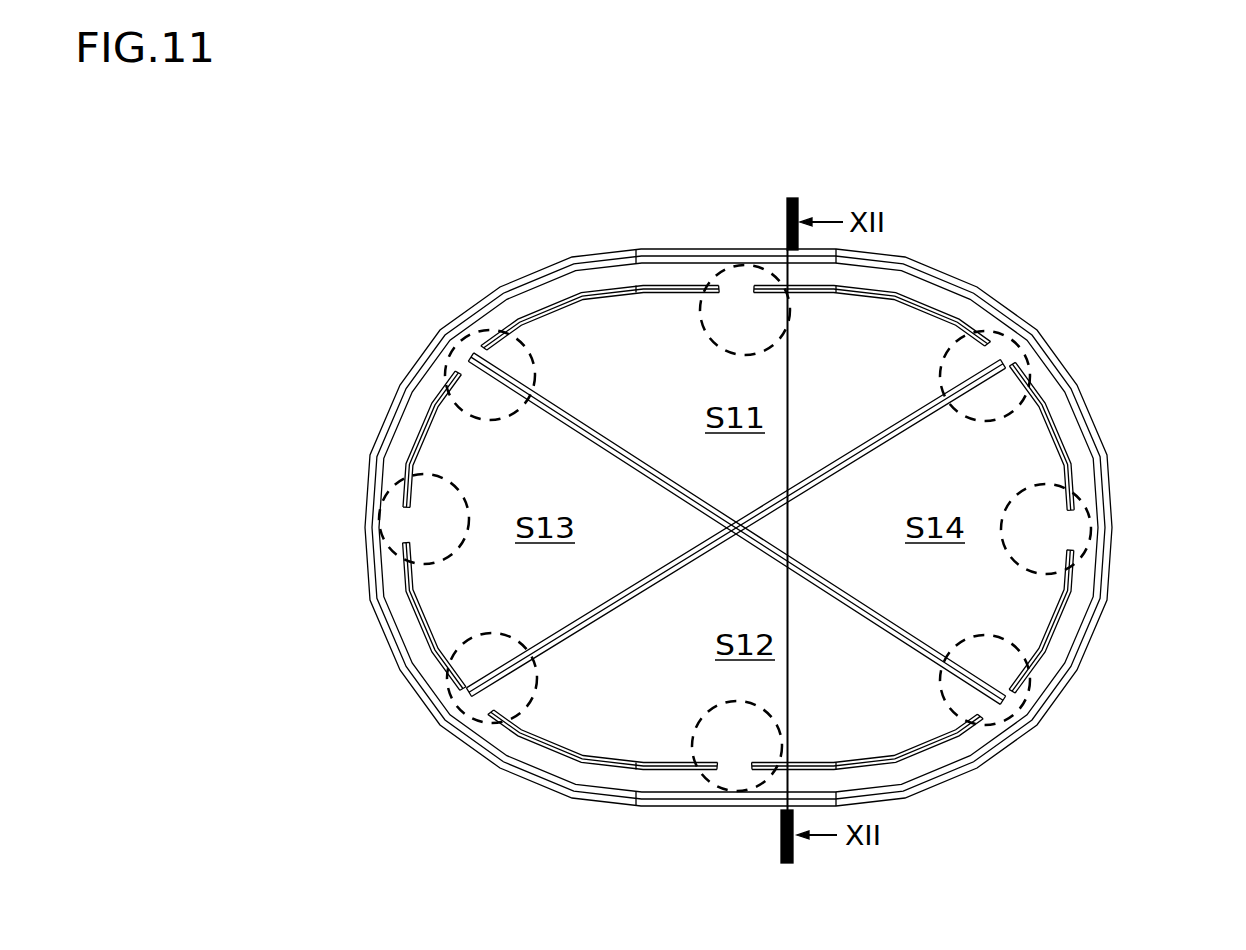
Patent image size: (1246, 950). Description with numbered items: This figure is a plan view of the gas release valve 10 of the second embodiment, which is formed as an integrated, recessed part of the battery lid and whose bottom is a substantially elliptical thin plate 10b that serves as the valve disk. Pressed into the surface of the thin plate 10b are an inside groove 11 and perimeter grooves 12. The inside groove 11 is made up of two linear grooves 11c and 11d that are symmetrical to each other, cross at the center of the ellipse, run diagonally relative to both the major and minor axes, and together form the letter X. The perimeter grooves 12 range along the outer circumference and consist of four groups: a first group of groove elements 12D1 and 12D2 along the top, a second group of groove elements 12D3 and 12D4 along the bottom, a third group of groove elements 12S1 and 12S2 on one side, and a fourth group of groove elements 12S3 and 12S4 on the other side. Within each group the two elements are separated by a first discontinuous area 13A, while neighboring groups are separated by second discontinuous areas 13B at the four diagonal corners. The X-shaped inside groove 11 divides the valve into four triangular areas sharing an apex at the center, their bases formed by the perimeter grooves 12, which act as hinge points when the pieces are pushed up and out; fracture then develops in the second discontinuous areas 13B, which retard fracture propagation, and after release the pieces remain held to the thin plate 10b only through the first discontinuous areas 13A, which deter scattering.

The gas release valve 10 is at (1005, 307).
The thin plate 10b is at (693, 280).
The inside groove 11 is at (735, 588).
The linear groove 11c is at (598, 433).
The linear groove 11d is at (616, 612).
The perimeter grooves 12 is at (745, 517).
The first groove element 12D1 is at (582, 290).
The first groove element 12D2 is at (886, 295).
The second groove element 12D3 is at (928, 762).
The second groove element 12D4 is at (650, 770).
The third groove element 12S1 is at (422, 630).
The third groove element 12S2 is at (410, 443).
The fourth groove element 12S3 is at (1058, 440).
The fourth groove element 12S4 is at (1058, 618).
The first discontinuous area 13A is at (748, 263).
The second discontinuous area 13B is at (452, 355).